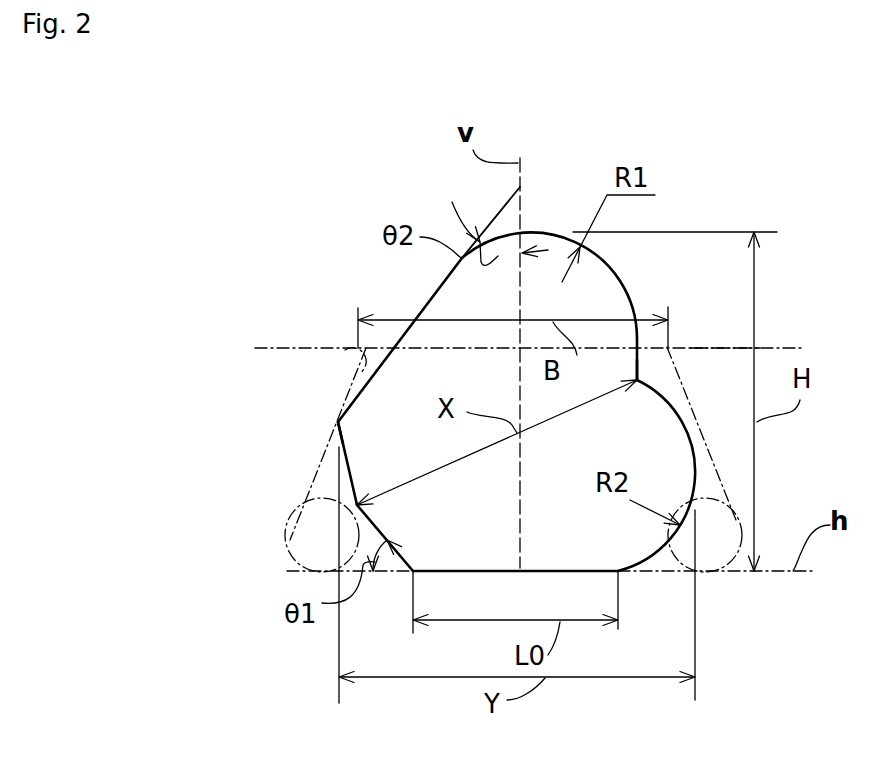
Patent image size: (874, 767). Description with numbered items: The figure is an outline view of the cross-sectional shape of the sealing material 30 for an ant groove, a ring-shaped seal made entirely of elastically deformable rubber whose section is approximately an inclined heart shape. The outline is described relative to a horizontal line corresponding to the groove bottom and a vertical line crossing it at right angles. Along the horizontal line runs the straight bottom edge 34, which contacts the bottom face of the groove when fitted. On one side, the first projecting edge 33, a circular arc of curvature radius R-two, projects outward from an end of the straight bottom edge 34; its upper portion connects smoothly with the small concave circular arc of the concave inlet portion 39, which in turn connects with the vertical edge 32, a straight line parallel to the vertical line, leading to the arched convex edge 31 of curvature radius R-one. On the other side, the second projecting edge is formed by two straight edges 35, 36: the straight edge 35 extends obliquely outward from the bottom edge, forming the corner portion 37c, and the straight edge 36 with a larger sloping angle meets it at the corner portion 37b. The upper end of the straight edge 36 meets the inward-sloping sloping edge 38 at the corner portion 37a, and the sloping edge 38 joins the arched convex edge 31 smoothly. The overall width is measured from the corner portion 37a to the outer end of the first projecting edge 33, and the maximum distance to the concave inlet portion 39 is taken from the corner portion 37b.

The sealing material 30 is at (608, 260).
The arched convex edge 31 is at (553, 233).
The vertical edge 32 is at (637, 380).
The first projecting edge 33 is at (695, 488).
The straight bottom edge 34 is at (548, 582).
The straight edge 35 is at (357, 548).
The straight edge 36 is at (347, 463).
The corner portion 37a is at (338, 414).
The corner portion 37b is at (357, 505).
The corner portion 37c is at (413, 585).
The sloping edge 38 is at (360, 373).
The concave inlet portion 39 is at (703, 348).